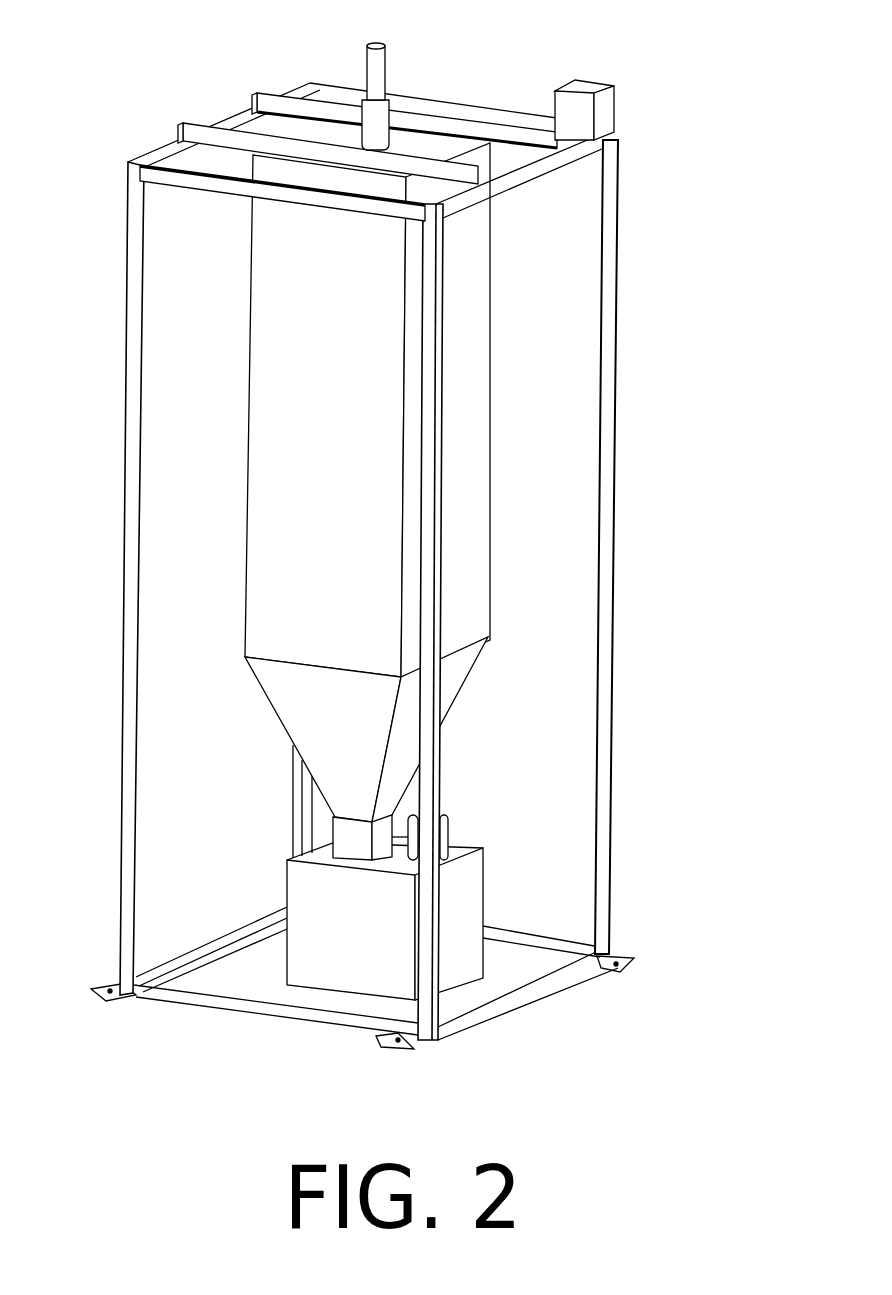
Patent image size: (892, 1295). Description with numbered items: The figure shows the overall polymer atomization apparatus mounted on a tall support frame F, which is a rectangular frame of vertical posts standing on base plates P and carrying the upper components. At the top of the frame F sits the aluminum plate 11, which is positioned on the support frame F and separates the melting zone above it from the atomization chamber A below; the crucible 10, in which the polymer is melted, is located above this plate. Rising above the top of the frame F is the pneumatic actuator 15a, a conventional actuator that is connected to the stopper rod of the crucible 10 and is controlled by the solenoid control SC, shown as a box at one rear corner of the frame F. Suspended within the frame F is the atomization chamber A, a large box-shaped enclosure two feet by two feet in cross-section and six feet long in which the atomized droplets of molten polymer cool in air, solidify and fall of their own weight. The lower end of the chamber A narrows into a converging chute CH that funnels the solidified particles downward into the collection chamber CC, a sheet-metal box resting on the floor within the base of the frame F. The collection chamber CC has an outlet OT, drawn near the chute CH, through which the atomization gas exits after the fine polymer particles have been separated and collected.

The pneumatic actuator 15a is at (415, 30).
The solenoid control SC is at (618, 112).
The aluminum plate 11 is at (388, 132).
The crucible 10 is at (388, 138).
The atomization chamber A is at (481, 482).
The support frame F is at (404, 566).
The chute CH is at (462, 688).
The outlet OT is at (447, 830).
The collection chamber CC is at (470, 910).
The base plate P is at (600, 957).